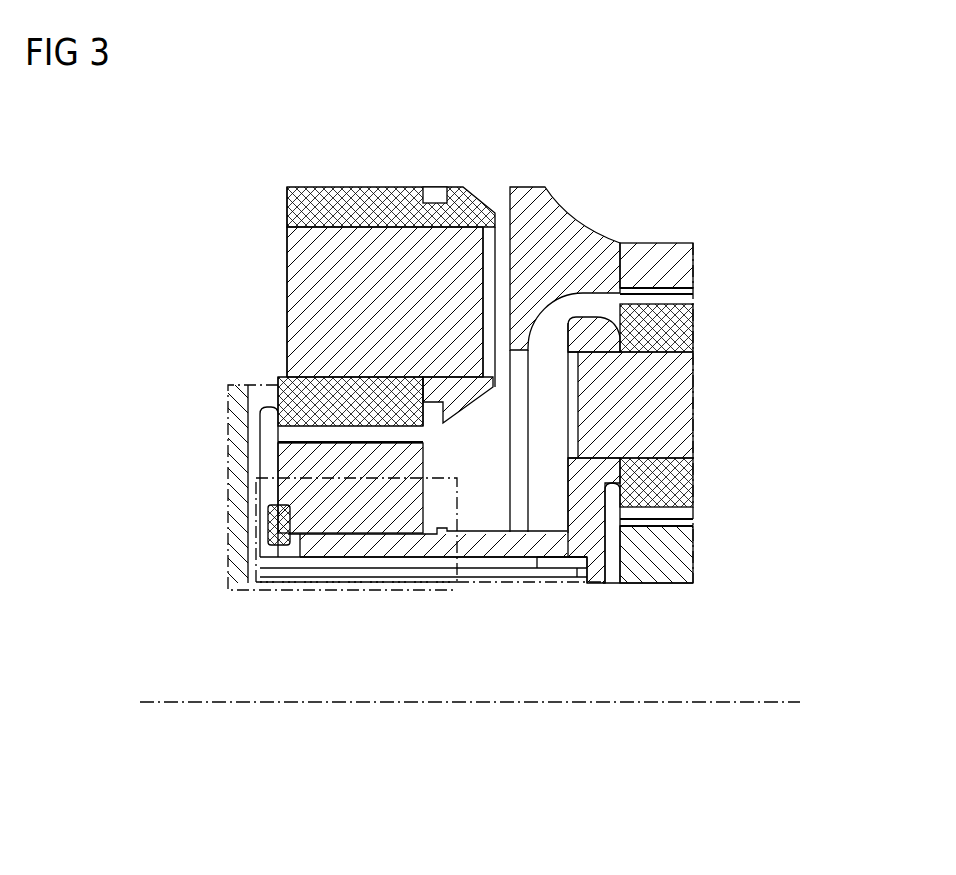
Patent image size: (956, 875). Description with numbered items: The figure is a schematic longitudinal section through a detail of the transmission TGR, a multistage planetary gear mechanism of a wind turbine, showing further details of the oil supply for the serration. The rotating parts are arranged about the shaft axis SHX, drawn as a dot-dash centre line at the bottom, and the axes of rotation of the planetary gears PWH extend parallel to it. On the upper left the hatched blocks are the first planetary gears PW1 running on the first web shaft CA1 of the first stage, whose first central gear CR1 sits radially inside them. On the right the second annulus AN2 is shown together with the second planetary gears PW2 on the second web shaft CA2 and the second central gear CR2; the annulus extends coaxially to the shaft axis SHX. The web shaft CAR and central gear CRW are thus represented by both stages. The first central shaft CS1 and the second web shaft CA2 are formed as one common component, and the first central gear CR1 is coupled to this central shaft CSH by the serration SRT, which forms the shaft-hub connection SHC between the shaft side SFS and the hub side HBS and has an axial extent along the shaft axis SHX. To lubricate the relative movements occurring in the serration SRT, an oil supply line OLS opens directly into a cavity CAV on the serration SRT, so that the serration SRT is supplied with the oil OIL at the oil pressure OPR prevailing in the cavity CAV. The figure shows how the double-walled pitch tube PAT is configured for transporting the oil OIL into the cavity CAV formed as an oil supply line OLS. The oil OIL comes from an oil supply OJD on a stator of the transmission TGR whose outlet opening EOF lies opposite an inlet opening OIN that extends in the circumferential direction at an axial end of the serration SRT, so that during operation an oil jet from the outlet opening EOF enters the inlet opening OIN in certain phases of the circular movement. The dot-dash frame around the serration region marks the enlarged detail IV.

The transmission TGR is at (580, 124).
The planetary gears PWH is at (461, 335).
The first planetary gears PW1 is at (360, 187).
The second planetary gears PW2 is at (680, 328).
The second annulus AN2 is at (660, 250).
The web shaft CAR is at (490, 385).
The first web shaft CA1 is at (295, 312).
The second web shaft CA2 is at (685, 400).
The central gear CRW is at (459, 503).
The first central gear CR1 is at (308, 457).
The second central gear CR2 is at (680, 555).
The hub side HBS is at (312, 506).
The oil supply line OLS is at (156, 525).
The cavity CAV is at (156, 525).
The oil pressure OPR is at (268, 530).
The central shaft CSH is at (423, 677).
The first central shaft CS1 is at (395, 545).
The shaft side SFS is at (334, 556).
The serration SRT is at (423, 702).
The shaft-hub connection SHC is at (363, 545).
The outlet opening EOF is at (425, 570).
The inlet opening OIN is at (303, 540).
The oil OIL is at (545, 660).
The oil supply OJD is at (545, 660).
The double-walled pitch tube PAT is at (540, 558).
The shaft axis SHX is at (152, 703).
The detail IV is at (256, 595).